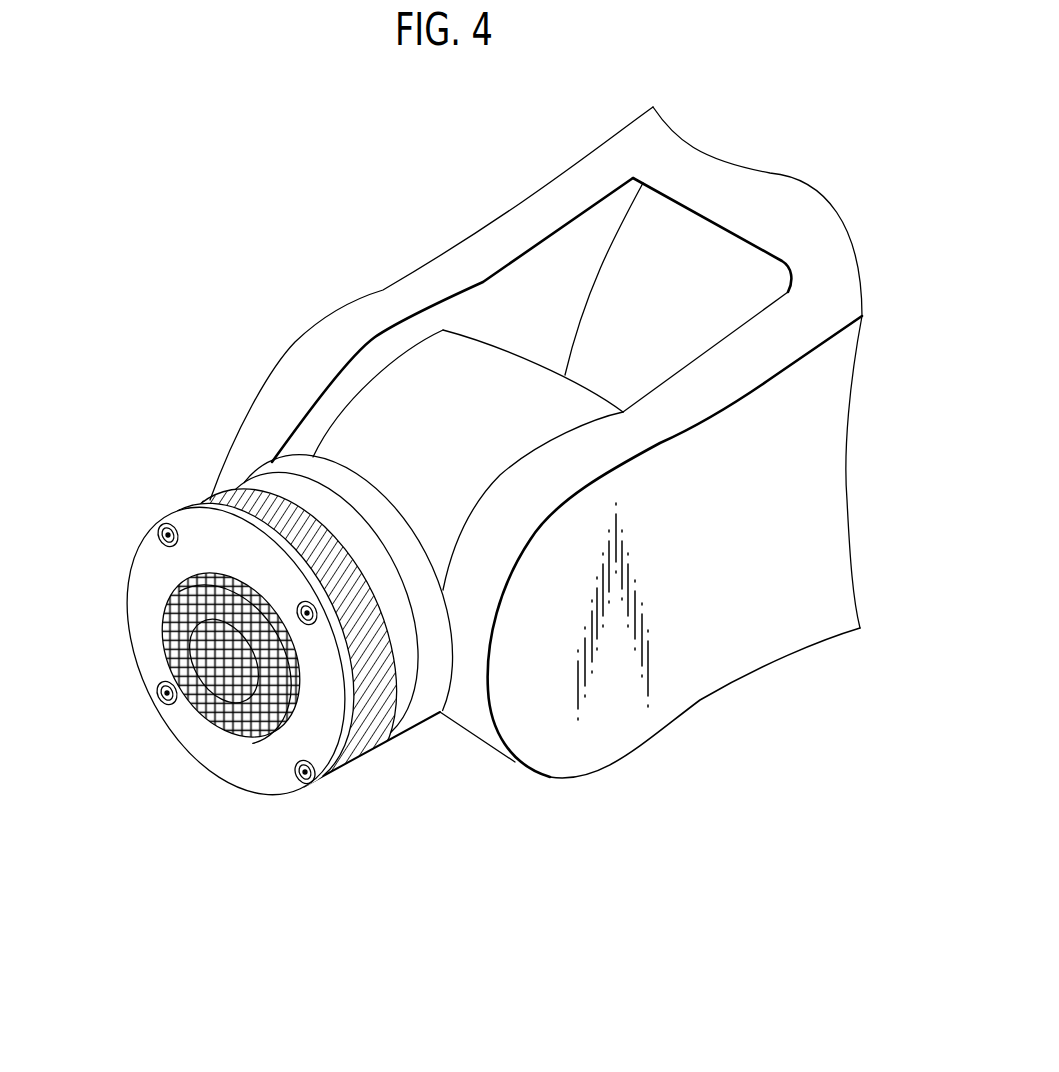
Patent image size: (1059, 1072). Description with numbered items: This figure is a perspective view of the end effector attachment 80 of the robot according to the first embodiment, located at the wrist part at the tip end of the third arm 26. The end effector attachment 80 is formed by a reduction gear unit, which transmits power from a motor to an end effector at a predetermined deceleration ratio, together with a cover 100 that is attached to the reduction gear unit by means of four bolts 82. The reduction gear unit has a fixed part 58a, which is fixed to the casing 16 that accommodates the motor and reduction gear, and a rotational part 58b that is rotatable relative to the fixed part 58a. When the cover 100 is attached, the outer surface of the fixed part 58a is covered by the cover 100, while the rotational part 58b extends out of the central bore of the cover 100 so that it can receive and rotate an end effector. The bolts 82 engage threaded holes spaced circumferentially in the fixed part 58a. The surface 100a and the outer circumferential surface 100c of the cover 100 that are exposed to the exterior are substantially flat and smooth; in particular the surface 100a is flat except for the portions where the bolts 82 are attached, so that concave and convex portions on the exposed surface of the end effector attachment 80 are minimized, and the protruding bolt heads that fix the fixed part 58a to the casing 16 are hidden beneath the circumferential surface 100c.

The casing 16 is at (490, 387).
The third arm 26 is at (725, 648).
The end effector attachment 80 is at (131, 455).
The bolts 82 is at (157, 528).
The cover 100 is at (240, 655).
The surface of the cover 100a is at (266, 770).
The circumferential surface of the cover 100c is at (203, 510).
The fixed part 58a is at (365, 739).
The rotational part 58b is at (250, 725).